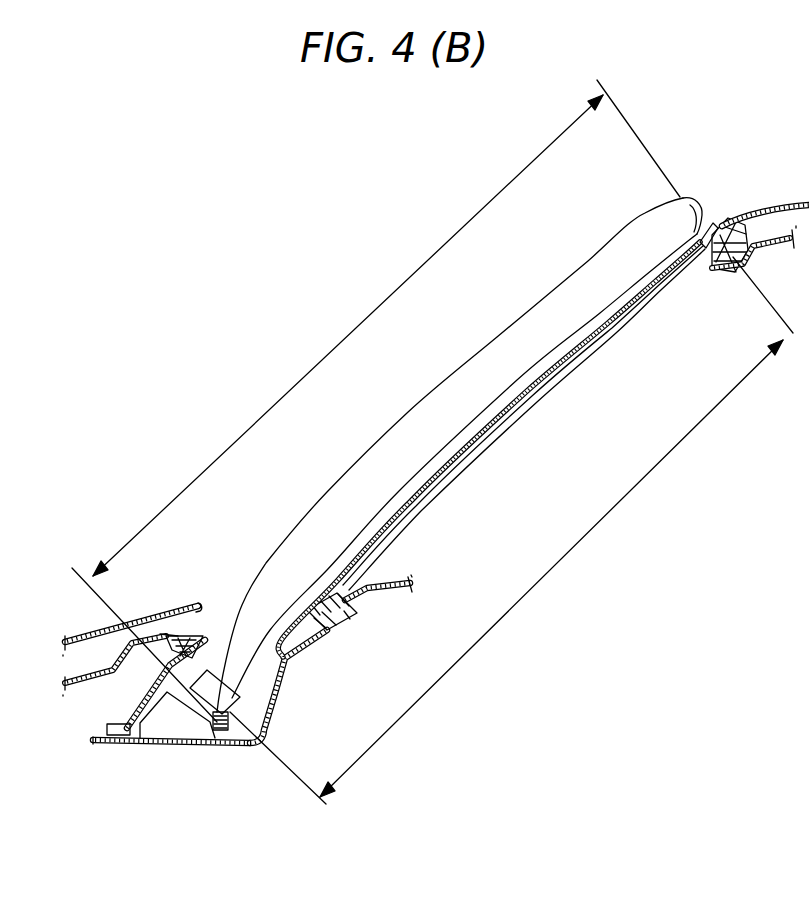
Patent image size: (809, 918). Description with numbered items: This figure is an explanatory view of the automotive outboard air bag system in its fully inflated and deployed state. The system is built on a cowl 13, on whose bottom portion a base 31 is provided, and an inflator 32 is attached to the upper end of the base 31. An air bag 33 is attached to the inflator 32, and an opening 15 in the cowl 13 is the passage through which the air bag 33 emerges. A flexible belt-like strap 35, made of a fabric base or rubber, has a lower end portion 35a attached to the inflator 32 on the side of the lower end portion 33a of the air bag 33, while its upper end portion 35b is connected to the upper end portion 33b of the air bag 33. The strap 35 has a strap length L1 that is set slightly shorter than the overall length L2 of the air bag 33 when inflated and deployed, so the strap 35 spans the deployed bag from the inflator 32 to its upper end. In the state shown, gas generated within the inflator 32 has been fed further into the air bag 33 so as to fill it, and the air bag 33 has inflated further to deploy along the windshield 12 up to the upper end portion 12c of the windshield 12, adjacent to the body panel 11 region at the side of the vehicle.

The vehicle body panel 11 is at (95, 630).
The windshield 12 is at (657, 272).
The upper end portion of the windshield 12c is at (690, 247).
The cowl 13 is at (138, 689).
The opening 15 is at (268, 668).
The base 31 is at (168, 727).
The inflator 32 is at (179, 697).
The air bag 33 is at (367, 477).
The lower end portion of the air bag 33a is at (203, 683).
The upper end portion of the air bag 33b is at (687, 195).
The strap 35 is at (440, 477).
The lower end portion of the strap 35a is at (229, 728).
The upper end portion of the strap 35b is at (713, 223).
The strap length L1 is at (511, 530).
The overall length of the air bag L2 is at (376, 401).